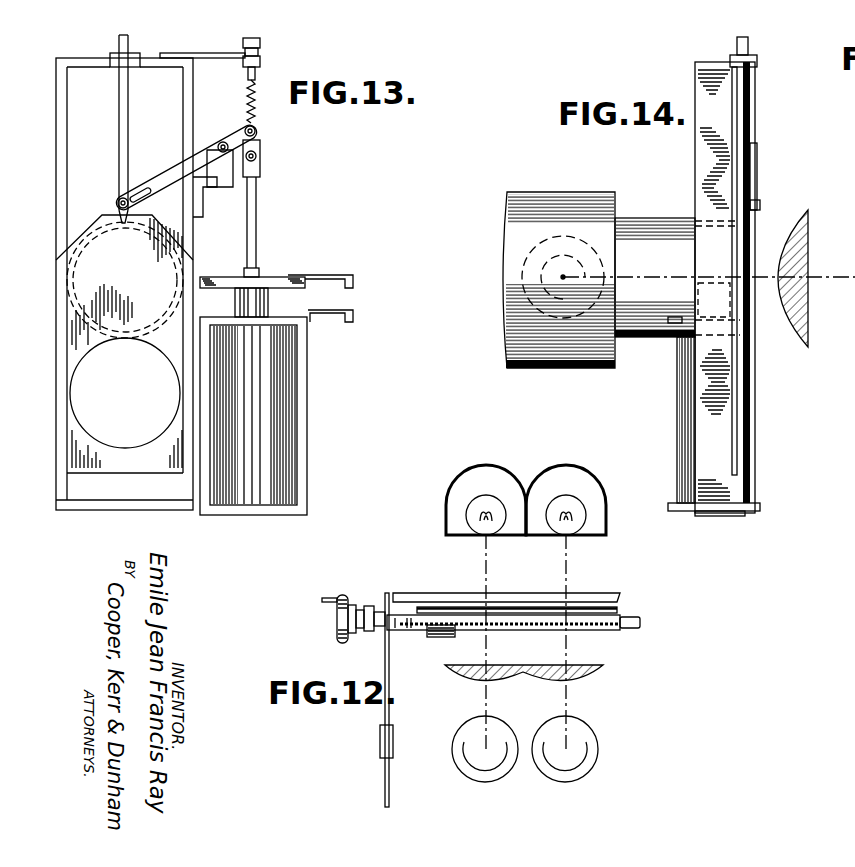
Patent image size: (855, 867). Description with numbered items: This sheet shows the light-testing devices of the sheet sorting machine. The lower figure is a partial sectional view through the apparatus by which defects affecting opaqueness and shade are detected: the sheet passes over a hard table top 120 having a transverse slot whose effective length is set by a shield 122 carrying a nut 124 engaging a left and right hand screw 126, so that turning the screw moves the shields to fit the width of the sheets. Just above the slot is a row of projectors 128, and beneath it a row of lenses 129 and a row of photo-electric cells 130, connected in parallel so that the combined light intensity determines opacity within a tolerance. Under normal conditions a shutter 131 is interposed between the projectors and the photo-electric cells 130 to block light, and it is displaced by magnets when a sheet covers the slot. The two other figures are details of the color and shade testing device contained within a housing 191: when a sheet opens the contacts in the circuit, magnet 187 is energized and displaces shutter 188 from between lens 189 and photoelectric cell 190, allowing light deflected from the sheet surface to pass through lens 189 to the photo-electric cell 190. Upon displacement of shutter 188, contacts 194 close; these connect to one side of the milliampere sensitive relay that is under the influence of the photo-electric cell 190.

In FIG. 13, the magnet 187 is at (277, 411).
In FIG. 14, the magnet 187 is at (757, 440).
In FIG. 13, the shutter 188 is at (140, 460).
In FIG. 14, the shutter 188 is at (737, 388).
In FIG. 13, the contacts 194 is at (349, 290).
In FIG. 14, the lens 189 is at (808, 308).
In FIG. 14, the photo-electric cell 190 is at (532, 298).
In FIG. 14, the housing 191 is at (583, 345).
In FIG. 12, the table top 120 is at (602, 596).
In FIG. 12, the shield 122 is at (523, 608).
In FIG. 12, the nut 124 is at (433, 638).
In FIG. 12, the left and right hand screw 126 is at (512, 630).
In FIG. 12, the projectors 128 is at (545, 527).
In FIG. 12, the lenses 129 is at (542, 683).
In FIG. 12, the photo-electric cells 130 is at (550, 773).
In FIG. 12, the shutter 131 is at (594, 626).